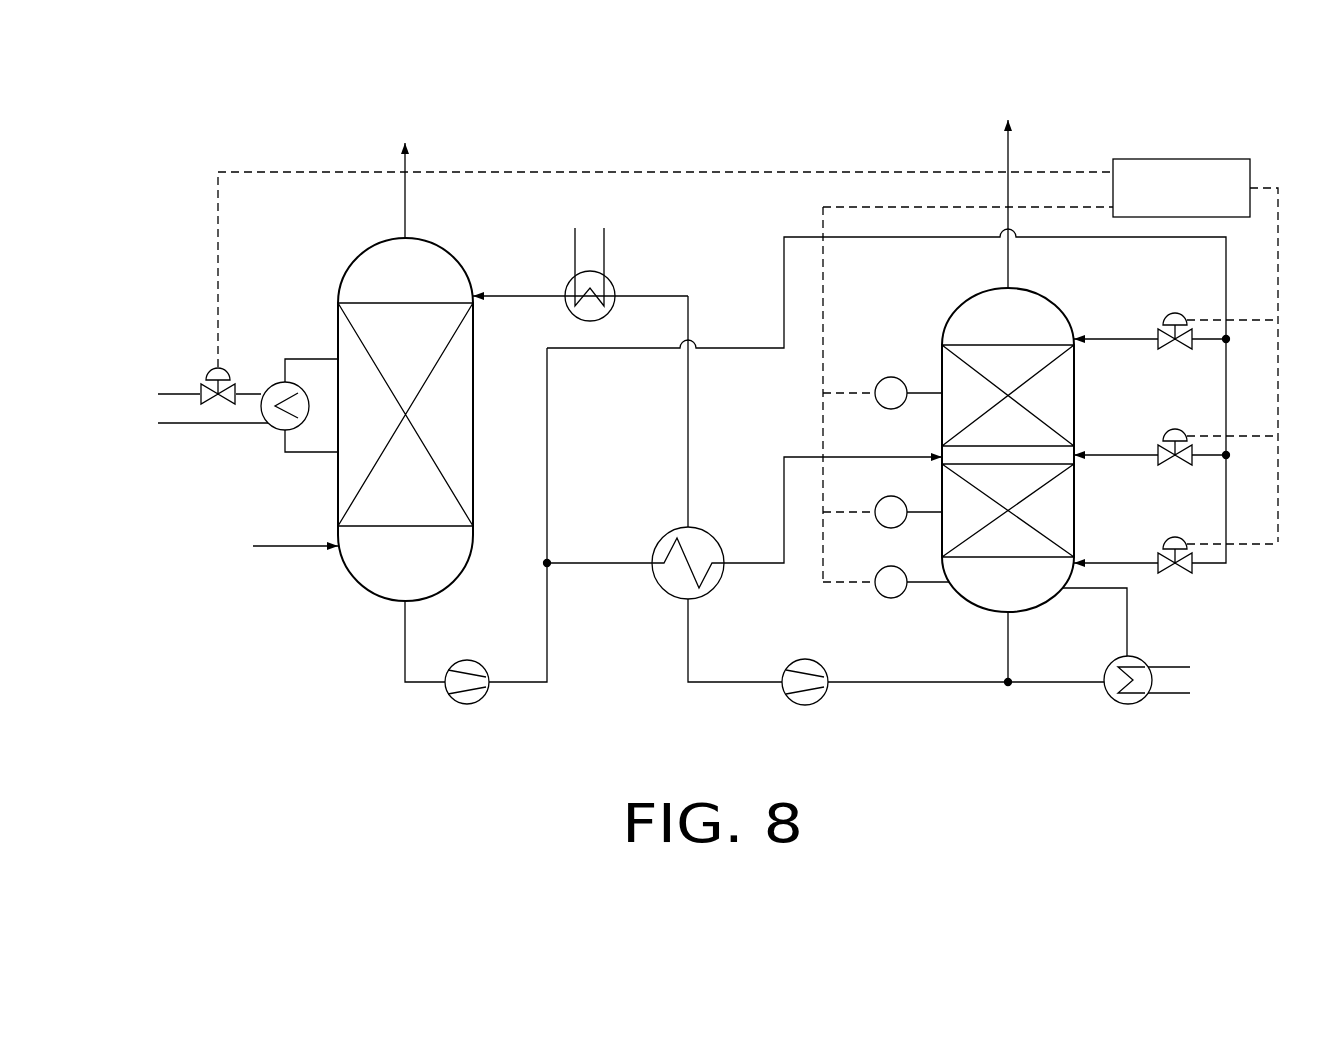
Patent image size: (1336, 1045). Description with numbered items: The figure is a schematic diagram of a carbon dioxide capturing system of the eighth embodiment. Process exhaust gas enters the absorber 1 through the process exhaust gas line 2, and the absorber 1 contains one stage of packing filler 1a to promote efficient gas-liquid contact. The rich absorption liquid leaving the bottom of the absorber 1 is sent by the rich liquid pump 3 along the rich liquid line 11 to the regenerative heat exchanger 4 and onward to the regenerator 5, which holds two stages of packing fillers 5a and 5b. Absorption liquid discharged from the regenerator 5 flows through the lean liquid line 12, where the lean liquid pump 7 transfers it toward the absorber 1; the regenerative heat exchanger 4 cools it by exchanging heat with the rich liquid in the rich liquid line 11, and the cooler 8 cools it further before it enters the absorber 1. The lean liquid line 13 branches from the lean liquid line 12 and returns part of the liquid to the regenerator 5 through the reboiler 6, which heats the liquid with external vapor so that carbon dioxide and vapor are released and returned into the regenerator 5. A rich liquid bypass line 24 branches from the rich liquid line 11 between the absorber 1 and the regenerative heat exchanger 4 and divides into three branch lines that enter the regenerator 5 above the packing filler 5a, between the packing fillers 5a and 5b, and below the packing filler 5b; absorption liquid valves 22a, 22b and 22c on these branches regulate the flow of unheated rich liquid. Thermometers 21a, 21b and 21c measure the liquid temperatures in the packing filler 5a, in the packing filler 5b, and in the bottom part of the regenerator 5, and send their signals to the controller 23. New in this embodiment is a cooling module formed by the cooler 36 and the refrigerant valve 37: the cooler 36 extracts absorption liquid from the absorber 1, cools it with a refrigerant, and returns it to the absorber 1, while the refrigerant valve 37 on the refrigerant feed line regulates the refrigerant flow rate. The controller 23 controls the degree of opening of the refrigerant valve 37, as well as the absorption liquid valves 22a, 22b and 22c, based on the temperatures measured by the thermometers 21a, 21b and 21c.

The absorber 1 is at (362, 257).
The packing filler 1a is at (335, 330).
The process exhaust gas line 2 is at (290, 545).
The rich liquid pump 3 is at (473, 704).
The regenerative heat exchanger 4 is at (700, 547).
The regenerator 5 is at (1043, 294).
The packing filler 5a is at (1057, 397).
The packing filler 5b is at (1057, 509).
The reboiler 6 is at (1108, 660).
The lean liquid pump 7 is at (812, 705).
The cooler 8 is at (585, 312).
The rich liquid line 11 is at (548, 623).
The lean liquid line 12 is at (922, 684).
The lean liquid line 13 is at (1035, 684).
The thermometer 21a is at (893, 377).
The thermometer 21b is at (876, 524).
The thermometer 21c is at (893, 598).
The absorption liquid valve 22a is at (1170, 312).
The absorption liquid valve 22b is at (1170, 428).
The absorption liquid valve 22c is at (1170, 537).
The controller 23 is at (1173, 158).
The rich liquid bypass line 24 is at (548, 428).
The cooler 36 is at (277, 433).
The refrigerant valve 37 is at (207, 368).